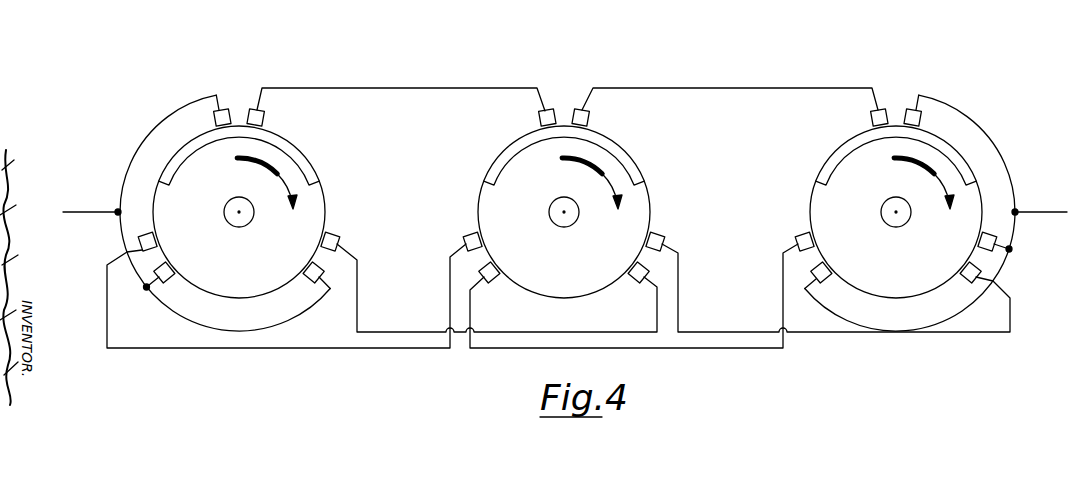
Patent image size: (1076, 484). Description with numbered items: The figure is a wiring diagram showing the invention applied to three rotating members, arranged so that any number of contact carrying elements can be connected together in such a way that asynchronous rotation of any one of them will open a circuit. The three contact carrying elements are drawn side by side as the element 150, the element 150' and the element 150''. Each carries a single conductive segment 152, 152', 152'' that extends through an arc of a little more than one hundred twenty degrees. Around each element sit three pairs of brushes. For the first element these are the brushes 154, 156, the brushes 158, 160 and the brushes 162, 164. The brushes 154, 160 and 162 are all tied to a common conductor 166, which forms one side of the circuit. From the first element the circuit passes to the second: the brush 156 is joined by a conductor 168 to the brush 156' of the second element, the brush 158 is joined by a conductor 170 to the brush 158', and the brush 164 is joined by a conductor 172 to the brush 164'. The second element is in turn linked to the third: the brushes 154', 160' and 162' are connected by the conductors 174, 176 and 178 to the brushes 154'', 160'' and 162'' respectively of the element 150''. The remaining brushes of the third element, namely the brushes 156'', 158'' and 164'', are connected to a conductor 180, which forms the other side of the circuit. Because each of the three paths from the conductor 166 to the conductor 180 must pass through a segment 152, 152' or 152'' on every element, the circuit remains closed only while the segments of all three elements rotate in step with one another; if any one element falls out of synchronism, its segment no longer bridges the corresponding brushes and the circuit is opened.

The contact carrying element 150 is at (263, 212).
The segment 152 is at (242, 213).
The brush 154 is at (199, 121).
The brush 156 is at (280, 119).
The brush 158 is at (140, 233).
The brush 160 is at (176, 287).
The brush 162 is at (297, 287).
The brush 164 is at (354, 237).
The conductor 166 is at (70, 211).
The conductor 168 is at (350, 88).
The conductor 170 is at (286, 348).
The conductor 172 is at (420, 308).
The conductor 174 is at (735, 88).
The conductor 176 is at (760, 348).
The conductor 178 is at (758, 308).
The conductor 180 is at (1059, 211).
The contact carrying element 150' is at (596, 212).
The segment 152' is at (547, 157).
The brush 154' is at (608, 116).
The brush 156' is at (523, 119).
The brush 158' is at (453, 232).
The brush 160' is at (504, 288).
The brush 162' is at (681, 236).
The brush 164' is at (627, 287).
The contact carrying element 150'' is at (872, 212).
The segment 152'' is at (890, 213).
The brush 154'' is at (850, 119).
The brush 156'' is at (941, 120).
The brush 158'' is at (844, 287).
The brush 160'' is at (791, 238).
The brush 162'' is at (952, 287).
The brush 164'' is at (1003, 229).